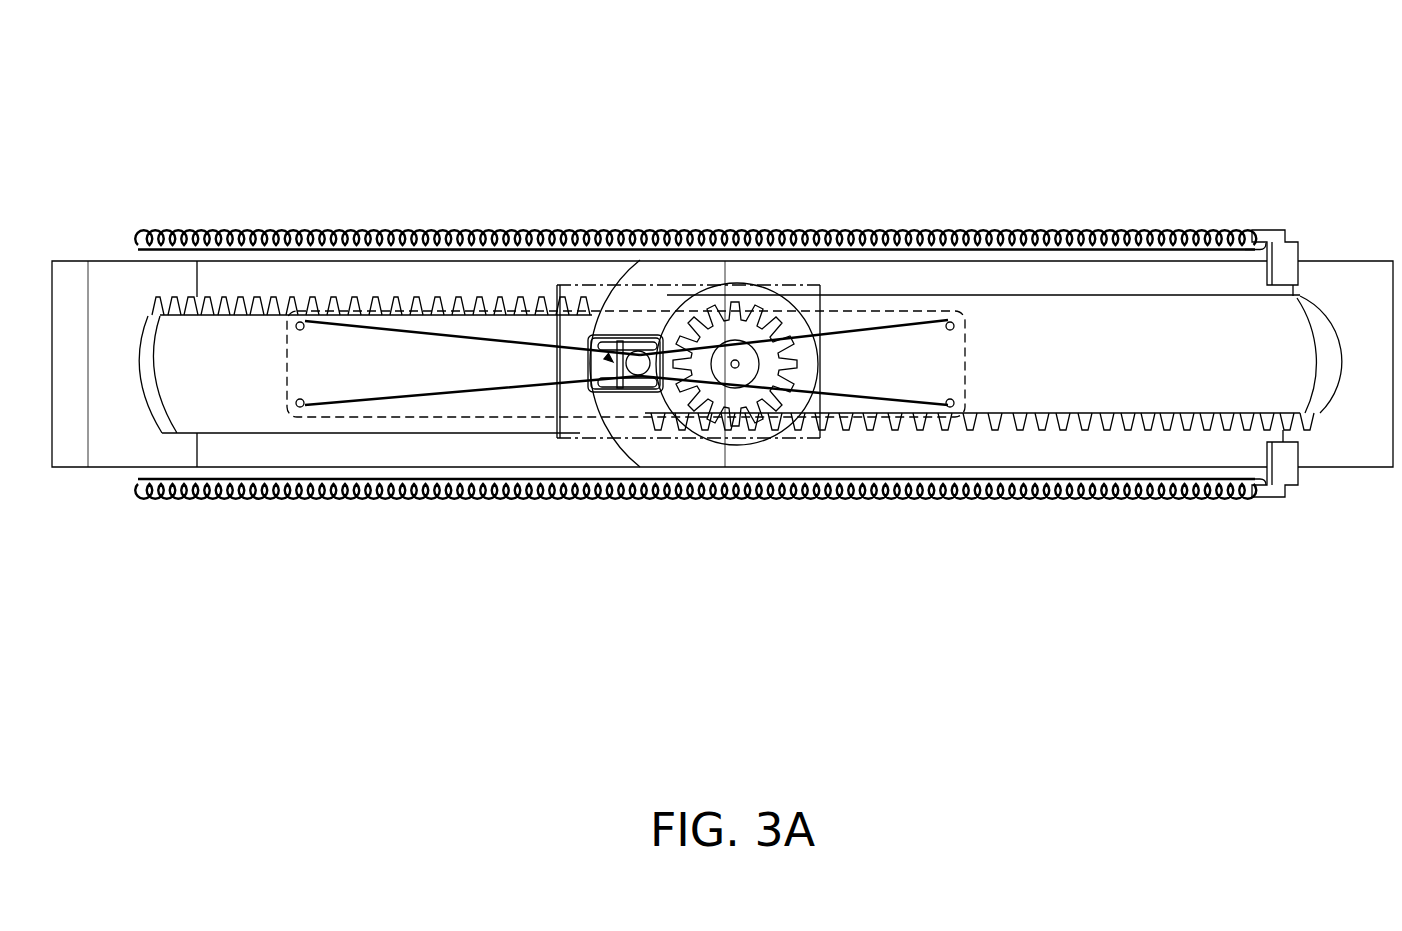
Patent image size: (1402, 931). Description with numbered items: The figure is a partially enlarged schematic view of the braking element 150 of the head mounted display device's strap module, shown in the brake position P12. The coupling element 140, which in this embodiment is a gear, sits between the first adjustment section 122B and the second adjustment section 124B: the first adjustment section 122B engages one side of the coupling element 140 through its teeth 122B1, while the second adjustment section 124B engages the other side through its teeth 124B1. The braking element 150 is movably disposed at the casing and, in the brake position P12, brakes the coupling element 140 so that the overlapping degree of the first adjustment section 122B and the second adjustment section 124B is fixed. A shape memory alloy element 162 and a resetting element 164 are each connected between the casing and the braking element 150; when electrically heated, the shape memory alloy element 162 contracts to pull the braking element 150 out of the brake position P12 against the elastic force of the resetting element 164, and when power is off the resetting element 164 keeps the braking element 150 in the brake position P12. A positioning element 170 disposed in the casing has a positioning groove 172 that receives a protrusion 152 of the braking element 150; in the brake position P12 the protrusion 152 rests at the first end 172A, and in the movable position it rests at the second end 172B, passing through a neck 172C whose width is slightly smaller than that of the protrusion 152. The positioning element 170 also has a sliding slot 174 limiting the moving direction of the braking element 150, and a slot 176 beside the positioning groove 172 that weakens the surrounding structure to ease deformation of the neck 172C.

The first adjustment section 122B is at (278, 285).
The teeth 122B1 is at (203, 298).
The second adjustment section 124B is at (1088, 284).
The teeth 124B1 is at (1118, 421).
The coupling element 140 is at (755, 327).
The braking element 150 is at (672, 335).
The protrusion 152 is at (632, 352).
The shape memory alloy element 162 is at (413, 328).
The resetting element 164 is at (900, 323).
The positioning element 170 is at (318, 418).
The positioning groove 172 is at (704, 508).
The first end 172A is at (655, 425).
The second end 172B is at (592, 392).
The neck 172C is at (621, 390).
The sliding slot 174 is at (588, 382).
The slot 176 is at (640, 335).
The brake position P12 is at (607, 356).